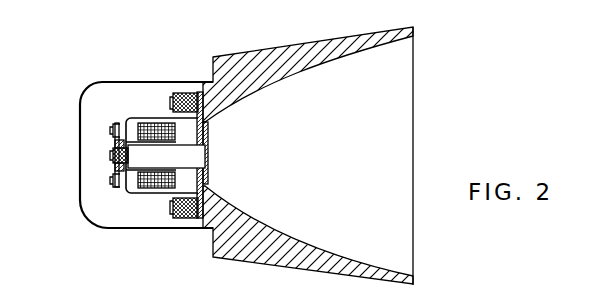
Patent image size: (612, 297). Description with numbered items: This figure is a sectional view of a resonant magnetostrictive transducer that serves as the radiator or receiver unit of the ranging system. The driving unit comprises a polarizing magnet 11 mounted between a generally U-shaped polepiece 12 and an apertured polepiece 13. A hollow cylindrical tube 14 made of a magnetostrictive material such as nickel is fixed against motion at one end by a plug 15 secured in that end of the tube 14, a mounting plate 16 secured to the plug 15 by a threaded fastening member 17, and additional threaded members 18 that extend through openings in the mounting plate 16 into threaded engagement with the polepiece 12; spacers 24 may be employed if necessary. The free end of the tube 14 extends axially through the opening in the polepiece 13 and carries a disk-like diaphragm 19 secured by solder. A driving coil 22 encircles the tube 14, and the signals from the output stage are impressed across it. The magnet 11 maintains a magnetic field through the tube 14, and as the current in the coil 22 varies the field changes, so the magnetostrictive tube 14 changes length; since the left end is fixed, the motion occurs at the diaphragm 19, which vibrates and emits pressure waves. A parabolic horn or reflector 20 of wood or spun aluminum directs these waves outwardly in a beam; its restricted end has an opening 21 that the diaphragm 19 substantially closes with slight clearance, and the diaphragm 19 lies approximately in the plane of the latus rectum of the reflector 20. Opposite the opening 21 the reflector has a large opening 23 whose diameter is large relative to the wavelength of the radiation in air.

The polarizing magnet 11 is at (187, 93).
The U-shaped polepiece 12 is at (131, 114).
The apertured polepiece 13 is at (201, 83).
The hollow cylindrical tube 14 is at (111, 151).
The plug 15 is at (116, 176).
The mounting plate 16 is at (121, 190).
The threaded fastening member 17 is at (114, 166).
The threaded members 18 is at (113, 129).
The disk-like diaphragm 19 is at (208, 156).
The parabolic horn or reflector 20 is at (339, 38).
The opening in restricted end of reflector 21 is at (208, 128).
The driving coil 22 is at (160, 122).
The reflector opening 23 is at (400, 91).
The spacers 24 is at (122, 188).